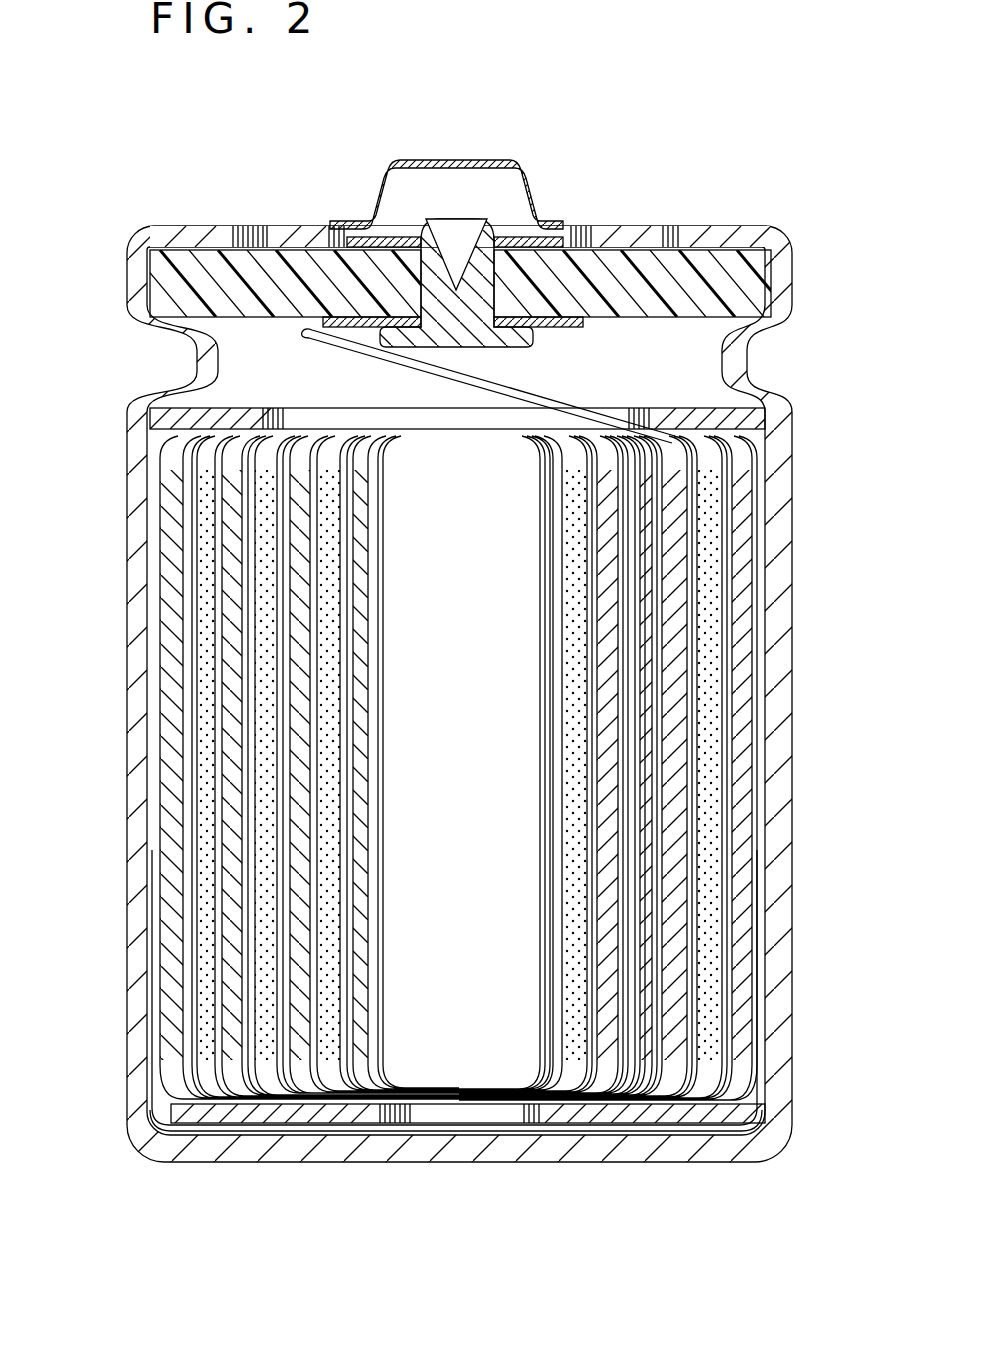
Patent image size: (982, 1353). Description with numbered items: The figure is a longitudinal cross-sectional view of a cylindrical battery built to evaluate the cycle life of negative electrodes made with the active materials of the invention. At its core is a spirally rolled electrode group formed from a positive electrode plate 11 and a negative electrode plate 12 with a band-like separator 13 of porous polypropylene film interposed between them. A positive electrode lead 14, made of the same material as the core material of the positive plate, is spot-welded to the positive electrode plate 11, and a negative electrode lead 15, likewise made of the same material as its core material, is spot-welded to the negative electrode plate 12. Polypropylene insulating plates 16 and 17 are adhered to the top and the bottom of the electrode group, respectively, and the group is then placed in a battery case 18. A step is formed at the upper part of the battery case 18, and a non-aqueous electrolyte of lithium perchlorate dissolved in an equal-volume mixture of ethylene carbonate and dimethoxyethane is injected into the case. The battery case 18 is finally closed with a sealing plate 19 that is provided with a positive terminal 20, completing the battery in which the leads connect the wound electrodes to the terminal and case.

The positive electrode plate 11 is at (712, 867).
The negative electrode plate 12 is at (746, 790).
The separator 13 is at (765, 668).
The positive electrode lead 14 is at (515, 392).
The negative electrode lead 15 is at (492, 1133).
The insulating plate 16 is at (745, 418).
The insulating plate 17 is at (744, 1117).
The battery case 18 is at (138, 582).
The sealing plate 19 is at (170, 273).
The positive terminal 20 is at (469, 160).